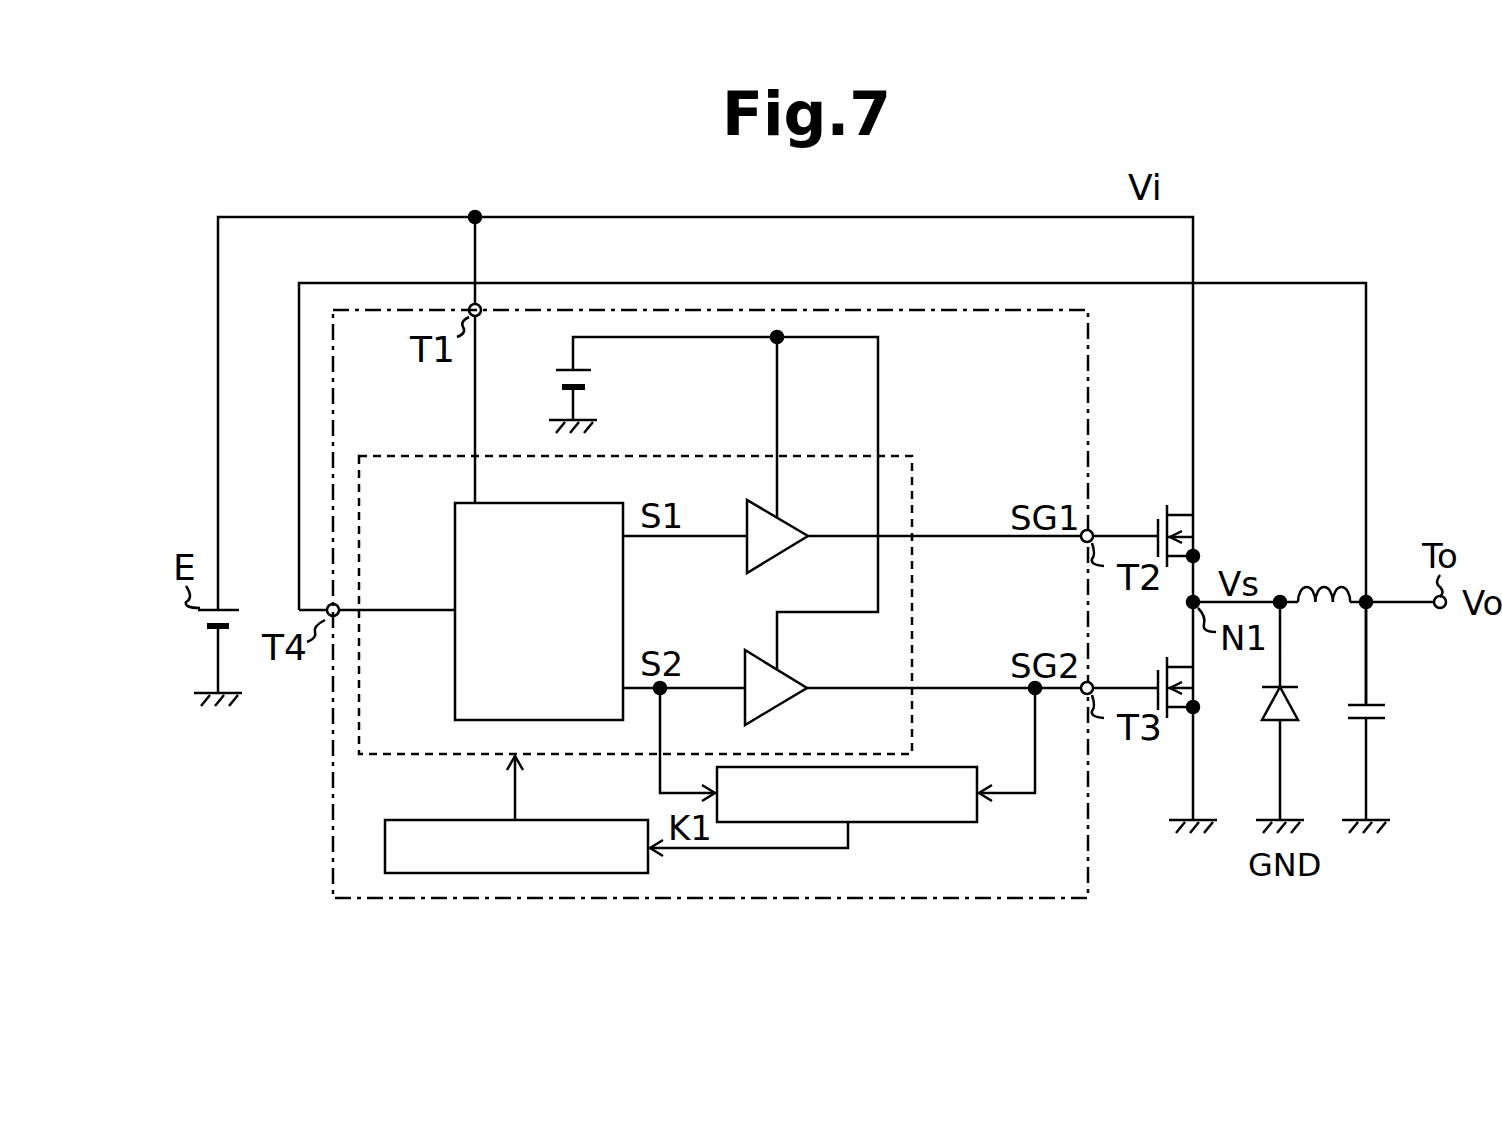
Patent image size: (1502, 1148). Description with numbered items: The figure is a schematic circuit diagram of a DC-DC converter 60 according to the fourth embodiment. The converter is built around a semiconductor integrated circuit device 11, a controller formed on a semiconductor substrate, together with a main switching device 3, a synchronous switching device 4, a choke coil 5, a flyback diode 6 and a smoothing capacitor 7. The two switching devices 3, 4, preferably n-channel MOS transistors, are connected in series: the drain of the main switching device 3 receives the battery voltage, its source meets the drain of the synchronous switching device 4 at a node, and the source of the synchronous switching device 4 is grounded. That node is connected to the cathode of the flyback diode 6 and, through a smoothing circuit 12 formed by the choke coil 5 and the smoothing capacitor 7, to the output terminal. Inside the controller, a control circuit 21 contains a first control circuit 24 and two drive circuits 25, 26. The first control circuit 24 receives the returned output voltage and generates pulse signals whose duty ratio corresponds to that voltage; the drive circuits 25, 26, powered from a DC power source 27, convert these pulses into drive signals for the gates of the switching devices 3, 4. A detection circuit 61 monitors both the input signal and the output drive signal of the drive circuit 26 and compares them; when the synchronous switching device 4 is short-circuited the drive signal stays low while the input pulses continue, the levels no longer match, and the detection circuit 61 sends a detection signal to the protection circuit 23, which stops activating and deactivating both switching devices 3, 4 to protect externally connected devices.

The main switching device 3 is at (1156, 522).
The synchronous switching device 4 is at (1158, 673).
The choke coil 5 is at (1300, 586).
The flyback diode 6 is at (1288, 708).
The smoothing capacitor 7 is at (1376, 702).
The semiconductor integrated circuit device 11 is at (1088, 370).
The smoothing circuit 12 is at (1339, 677).
The control circuit 21 is at (670, 452).
The protection circuit 23 is at (553, 820).
The first control circuit 24 is at (592, 503).
The drive circuit 25 is at (797, 523).
The drive circuit 26 is at (796, 672).
The DC power source 27 is at (562, 368).
The DC-DC converter 60 is at (860, 458).
The detection circuit 61 is at (968, 822).